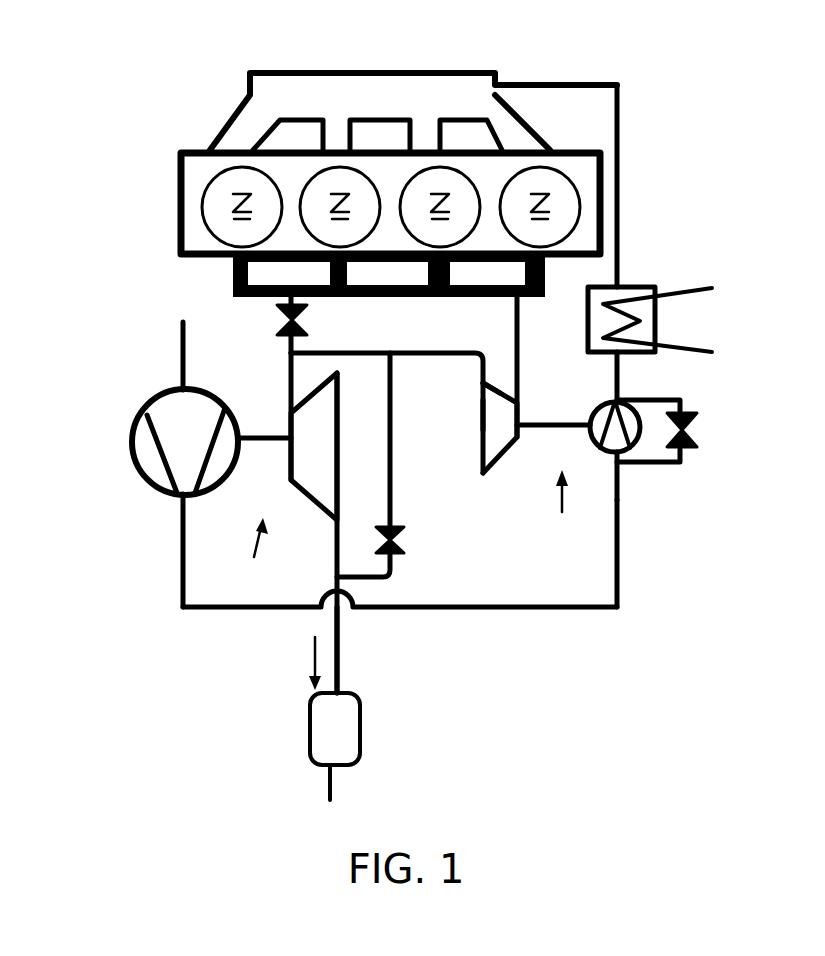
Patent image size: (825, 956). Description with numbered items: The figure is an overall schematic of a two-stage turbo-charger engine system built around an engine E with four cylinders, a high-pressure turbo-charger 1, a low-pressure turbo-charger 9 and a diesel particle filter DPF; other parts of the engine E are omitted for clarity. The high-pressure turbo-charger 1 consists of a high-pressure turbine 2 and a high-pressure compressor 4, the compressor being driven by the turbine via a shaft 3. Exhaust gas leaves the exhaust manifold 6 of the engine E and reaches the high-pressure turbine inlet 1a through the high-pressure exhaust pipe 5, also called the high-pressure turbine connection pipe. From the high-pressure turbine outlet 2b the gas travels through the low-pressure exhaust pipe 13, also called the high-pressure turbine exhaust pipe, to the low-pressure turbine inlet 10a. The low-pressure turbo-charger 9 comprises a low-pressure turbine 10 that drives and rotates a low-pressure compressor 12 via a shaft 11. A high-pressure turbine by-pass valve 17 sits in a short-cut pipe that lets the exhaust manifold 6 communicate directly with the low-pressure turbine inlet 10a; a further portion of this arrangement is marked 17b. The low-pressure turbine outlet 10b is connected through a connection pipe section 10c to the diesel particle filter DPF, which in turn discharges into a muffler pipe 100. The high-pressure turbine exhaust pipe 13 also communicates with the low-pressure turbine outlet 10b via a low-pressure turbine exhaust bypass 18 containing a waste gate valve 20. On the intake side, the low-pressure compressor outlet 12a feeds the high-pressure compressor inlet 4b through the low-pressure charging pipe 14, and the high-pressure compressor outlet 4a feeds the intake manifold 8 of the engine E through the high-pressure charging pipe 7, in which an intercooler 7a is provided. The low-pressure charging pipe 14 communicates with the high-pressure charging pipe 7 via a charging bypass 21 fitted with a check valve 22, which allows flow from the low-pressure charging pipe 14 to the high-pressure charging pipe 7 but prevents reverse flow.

The high-pressure turbo-charger 1 is at (562, 511).
The high-pressure turbine inlet 1a is at (507, 413).
The high-pressure turbine 2 is at (500, 433).
The high-pressure turbine outlet 2b is at (483, 386).
The shaft 3 is at (547, 420).
The high-pressure compressor 4 is at (600, 405).
The high-pressure compressor outlet 4a is at (683, 402).
The high-pressure compressor inlet 4b is at (612, 455).
The high-pressure exhaust pipe 5 is at (520, 345).
The exhaust manifold 6 is at (449, 298).
The high-pressure charging pipe 7 is at (620, 112).
The intercooler 7a is at (637, 287).
The intake manifold 8 is at (310, 90).
The low-pressure turbo-charger 9 is at (252, 555).
The low-pressure turbine 10 is at (327, 447).
The low-pressure turbine inlet 10a is at (285, 410).
The low-pressure turbine outlet 10b is at (332, 527).
The connection pipe section 10c is at (337, 645).
The shaft 11 is at (260, 437).
The low-pressure compressor 12 is at (140, 473).
The low-pressure compressor outlet 12a is at (183, 500).
The low-pressure exhaust pipe 13 is at (321, 315).
The low-pressure charging pipe 14 is at (558, 612).
The high-pressure turbine by-pass valve 17 is at (276, 317).
The valve outlet 17b is at (299, 341).
The low-pressure turbine exhaust bypass 18 is at (392, 473).
The waste gate valve 20 is at (406, 545).
The charging bypass 21 is at (670, 468).
The check valve 22 is at (698, 437).
The muffler pipe 100 is at (330, 785).
The engine E is at (168, 222).
The diesel particle filter DPF is at (350, 735).